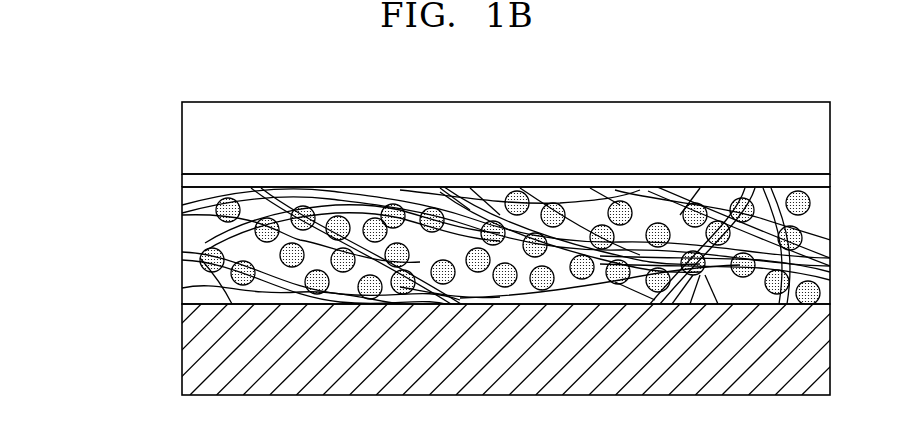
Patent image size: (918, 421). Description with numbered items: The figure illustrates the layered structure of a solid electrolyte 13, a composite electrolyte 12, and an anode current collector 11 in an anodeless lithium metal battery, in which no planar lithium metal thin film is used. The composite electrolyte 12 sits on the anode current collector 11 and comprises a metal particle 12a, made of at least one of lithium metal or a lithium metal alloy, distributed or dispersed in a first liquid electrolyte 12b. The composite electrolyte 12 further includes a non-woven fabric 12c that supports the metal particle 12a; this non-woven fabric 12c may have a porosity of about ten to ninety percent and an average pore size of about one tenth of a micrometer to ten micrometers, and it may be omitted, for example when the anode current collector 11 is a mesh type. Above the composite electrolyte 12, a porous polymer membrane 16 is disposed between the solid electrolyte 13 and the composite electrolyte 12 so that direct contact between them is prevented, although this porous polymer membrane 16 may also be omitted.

The anode current collector 11 is at (200, 347).
The composite electrolyte 12 is at (426, 248).
The metal particle 12a is at (197, 254).
The first liquid electrolyte 12b is at (197, 287).
The non-woven fabric 12c is at (197, 235).
The solid electrolyte 13 is at (197, 133).
The porous polymer membrane 16 is at (197, 180).